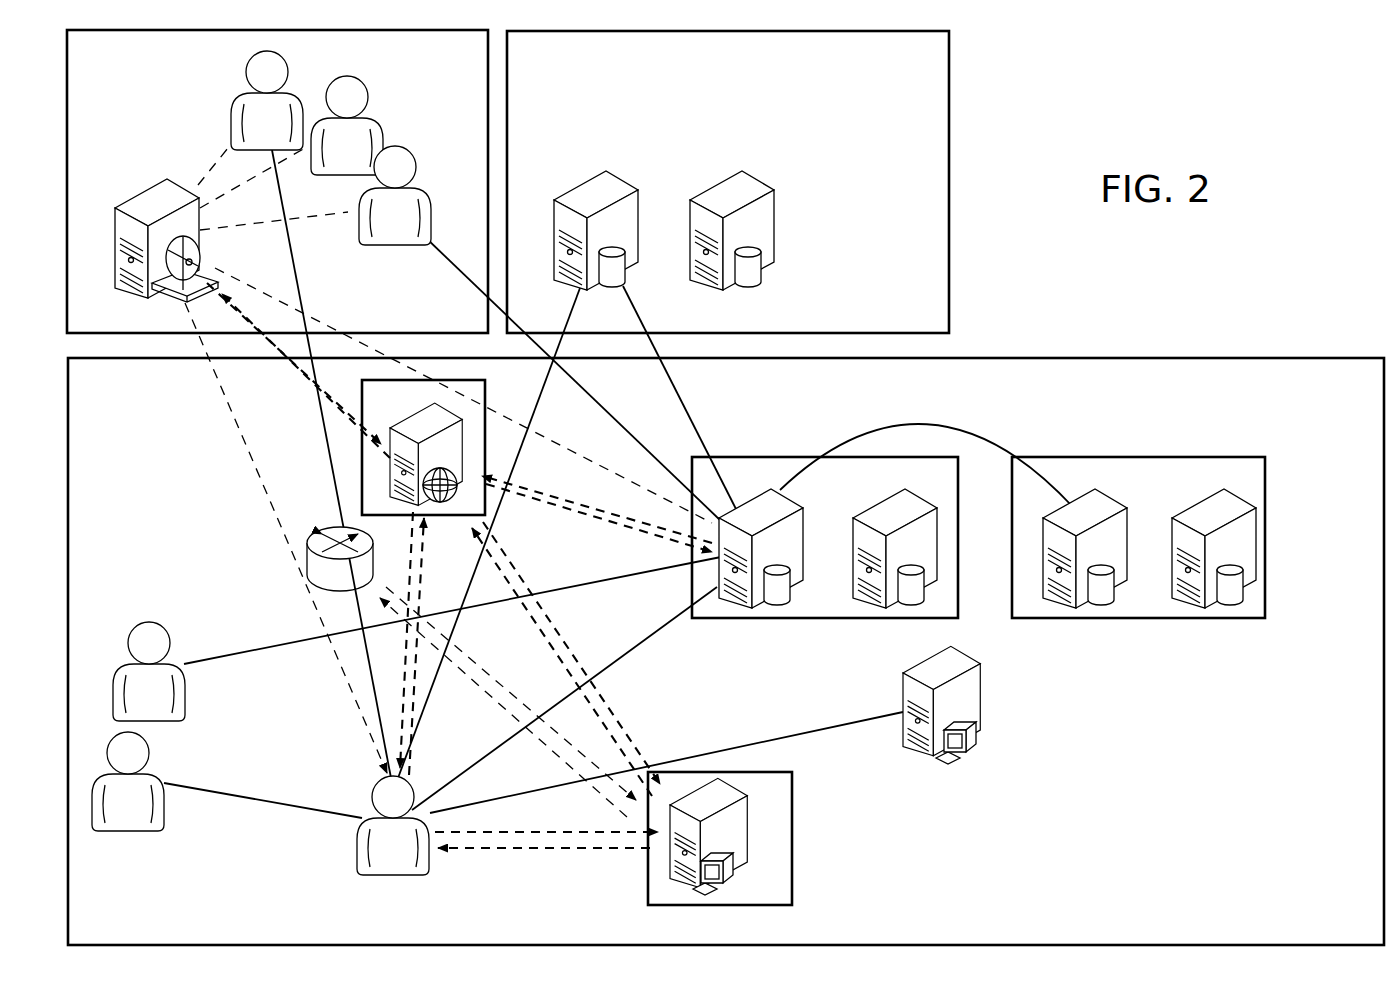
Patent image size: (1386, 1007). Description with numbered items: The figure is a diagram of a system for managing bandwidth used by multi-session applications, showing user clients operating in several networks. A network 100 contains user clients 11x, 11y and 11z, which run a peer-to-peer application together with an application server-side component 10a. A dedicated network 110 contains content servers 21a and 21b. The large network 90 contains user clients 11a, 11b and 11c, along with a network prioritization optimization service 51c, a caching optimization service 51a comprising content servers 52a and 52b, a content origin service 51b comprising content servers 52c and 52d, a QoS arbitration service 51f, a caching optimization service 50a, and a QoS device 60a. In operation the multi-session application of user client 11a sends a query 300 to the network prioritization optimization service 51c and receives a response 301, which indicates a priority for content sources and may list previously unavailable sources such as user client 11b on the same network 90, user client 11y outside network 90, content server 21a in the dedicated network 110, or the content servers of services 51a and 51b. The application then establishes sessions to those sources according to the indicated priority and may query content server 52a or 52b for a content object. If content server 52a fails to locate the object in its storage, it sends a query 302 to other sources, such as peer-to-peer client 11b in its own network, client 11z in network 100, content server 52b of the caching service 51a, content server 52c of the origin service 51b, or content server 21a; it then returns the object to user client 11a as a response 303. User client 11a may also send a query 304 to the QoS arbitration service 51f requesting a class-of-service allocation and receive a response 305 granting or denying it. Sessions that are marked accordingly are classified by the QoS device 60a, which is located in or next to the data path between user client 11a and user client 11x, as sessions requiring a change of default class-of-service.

The network 100 is at (126, 62).
The dedicated network 110 is at (564, 62).
The network 90 is at (112, 390).
The application server-side component 10a is at (145, 197).
The user client 11x is at (250, 72).
The user client 11y is at (360, 97).
The user client 11z is at (393, 232).
The user client 11a is at (392, 862).
The user client 11b is at (125, 820).
The user client 11c is at (175, 698).
The content server 21a is at (583, 196).
The content server 21b is at (717, 196).
The caching optimization service 50a is at (972, 705).
The caching optimization service 51a is at (943, 490).
The content origin service 51b is at (1262, 490).
The network prioritization optimization service 51c is at (404, 409).
The QoS arbitration service 51f is at (738, 856).
The content server 52a is at (798, 518).
The content server 52b is at (930, 545).
The content server 52c is at (1122, 518).
The content server 52d is at (1250, 545).
The QoS device 60a is at (328, 533).
The query 300 is at (297, 370).
The response 301 is at (320, 408).
The query 302 is at (541, 830).
The response 303 is at (546, 858).
The query 304 is at (514, 716).
The response 305 is at (513, 655).